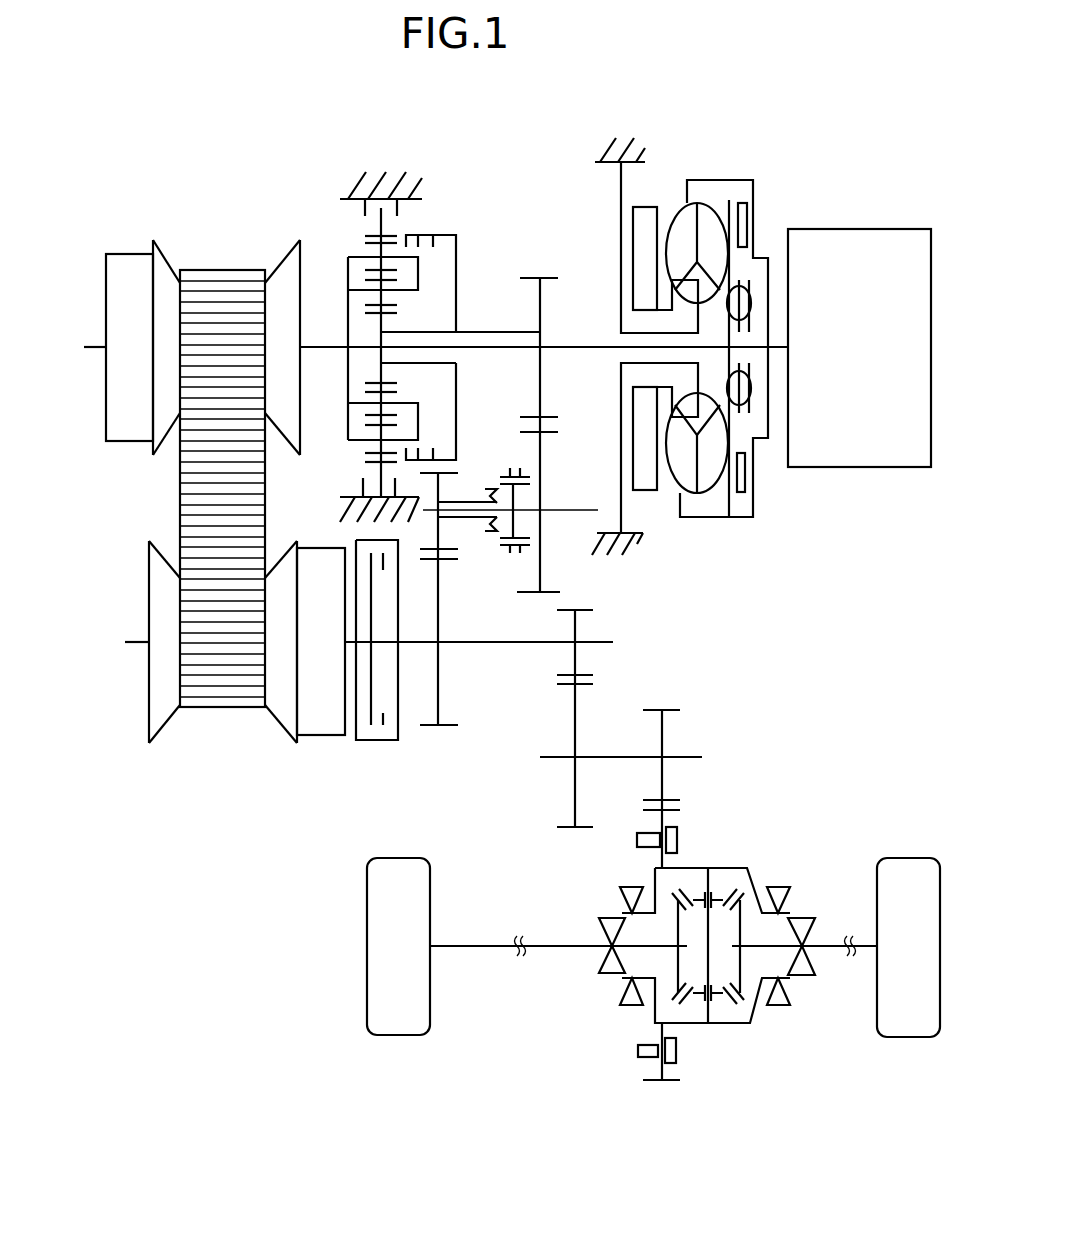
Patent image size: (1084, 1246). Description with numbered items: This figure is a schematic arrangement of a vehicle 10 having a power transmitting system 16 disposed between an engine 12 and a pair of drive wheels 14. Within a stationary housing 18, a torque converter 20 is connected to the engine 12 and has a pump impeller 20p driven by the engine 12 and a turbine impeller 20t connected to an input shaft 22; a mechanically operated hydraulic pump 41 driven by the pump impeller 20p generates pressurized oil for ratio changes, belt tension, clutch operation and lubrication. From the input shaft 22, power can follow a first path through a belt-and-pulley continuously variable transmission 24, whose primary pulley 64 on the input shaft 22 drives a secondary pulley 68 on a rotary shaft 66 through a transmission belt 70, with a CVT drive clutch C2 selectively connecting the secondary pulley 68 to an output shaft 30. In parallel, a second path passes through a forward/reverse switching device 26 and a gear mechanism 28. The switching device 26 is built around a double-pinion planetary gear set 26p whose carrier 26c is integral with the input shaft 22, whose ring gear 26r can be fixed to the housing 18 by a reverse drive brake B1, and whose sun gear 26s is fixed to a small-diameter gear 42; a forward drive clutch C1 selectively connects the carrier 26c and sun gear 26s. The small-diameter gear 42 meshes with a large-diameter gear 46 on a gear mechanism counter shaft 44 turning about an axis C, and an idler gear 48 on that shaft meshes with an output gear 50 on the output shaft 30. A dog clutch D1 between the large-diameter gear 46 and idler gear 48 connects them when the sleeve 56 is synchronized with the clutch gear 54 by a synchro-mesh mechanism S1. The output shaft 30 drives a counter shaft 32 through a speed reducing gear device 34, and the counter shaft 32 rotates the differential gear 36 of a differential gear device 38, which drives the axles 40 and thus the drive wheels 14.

The vehicle 10 is at (822, 82).
The engine 12 is at (848, 243).
The drive wheels 14 is at (398, 868).
The power transmitting system 16 is at (701, 301).
The housing 18 is at (385, 180).
The torque converter 20 is at (694, 324).
The pump impeller 20p is at (678, 222).
The turbine impeller 20t is at (718, 228).
The mechanically operated hydraulic pump 41 is at (645, 215).
The input shaft 22 is at (568, 345).
The continuously variable transmission 24 is at (216, 461).
The forward/reverse switching device 26 is at (410, 323).
The ring gear 26r is at (365, 233).
The carrier 26c is at (418, 290).
The sun gear 26s is at (397, 382).
The planetary gear set 26p is at (363, 468).
The gear mechanism 28 is at (554, 519).
The output shaft 30 is at (482, 648).
The counter shaft 32 is at (690, 756).
The speed reducing gear device 34 is at (596, 674).
The differential gear 36 is at (668, 708).
The differential gear device 38 is at (735, 862).
The axles 40 is at (553, 946).
The small-diameter gear 42 is at (540, 270).
The gear mechanism counter shaft 44 is at (422, 512).
The large-diameter gear 46 is at (536, 598).
The idler gear 48 is at (426, 551).
The output gear 50 is at (425, 727).
The clutch gear 54 is at (483, 522).
The sleeve 56 is at (512, 548).
The primary pulley 64 is at (92, 300).
The rotary shaft 66 is at (130, 645).
The secondary pulley 68 is at (130, 605).
The transmission belt 70 is at (222, 708).
The reverse drive brake B1 is at (364, 214).
The forward drive clutch C1 is at (431, 333).
The CVT drive clutch C2 is at (374, 656).
The dog clutch D1 is at (493, 468).
The synchro-mesh mechanism S1 is at (489, 487).
The axis C is at (512, 491).